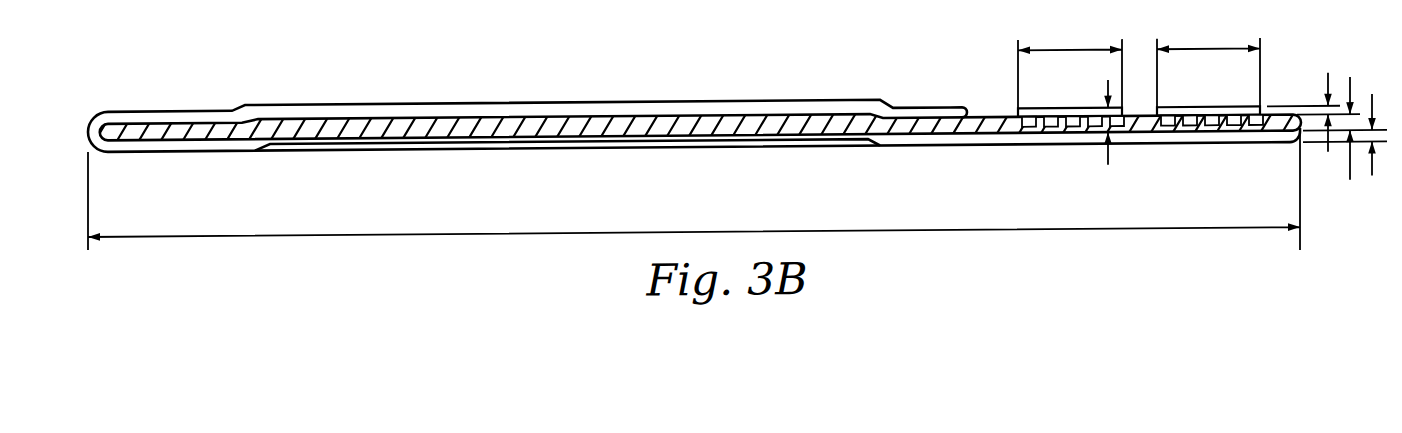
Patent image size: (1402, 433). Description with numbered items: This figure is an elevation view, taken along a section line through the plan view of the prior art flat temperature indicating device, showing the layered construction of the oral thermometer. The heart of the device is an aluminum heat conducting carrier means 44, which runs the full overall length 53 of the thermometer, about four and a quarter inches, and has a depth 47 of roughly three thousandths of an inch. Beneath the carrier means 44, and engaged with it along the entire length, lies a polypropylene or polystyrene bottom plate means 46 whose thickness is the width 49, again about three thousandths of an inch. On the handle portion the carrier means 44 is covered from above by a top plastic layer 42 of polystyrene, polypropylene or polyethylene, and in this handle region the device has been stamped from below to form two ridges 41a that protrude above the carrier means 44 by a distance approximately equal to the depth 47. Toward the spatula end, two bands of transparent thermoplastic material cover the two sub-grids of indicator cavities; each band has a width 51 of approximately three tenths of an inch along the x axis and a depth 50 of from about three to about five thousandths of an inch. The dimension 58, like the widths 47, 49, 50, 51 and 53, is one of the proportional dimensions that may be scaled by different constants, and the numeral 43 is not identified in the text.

The ridges 41a is at (357, 107).
The top plastic layer 42 is at (155, 118).
The electrode 43 is at (1082, 115).
The heat conducting carrier means 44 is at (992, 119).
The bottom plate means 46 is at (182, 136).
The depth of carrier means 47 is at (1350, 184).
The width of bottom plate means 49 is at (1372, 188).
The depth of thermoplastic bands 50 is at (1328, 84).
The width of thermoplastic bands 51 is at (1046, 56).
The overall length 53 is at (1148, 241).
The width dimension 58 is at (1092, 135).